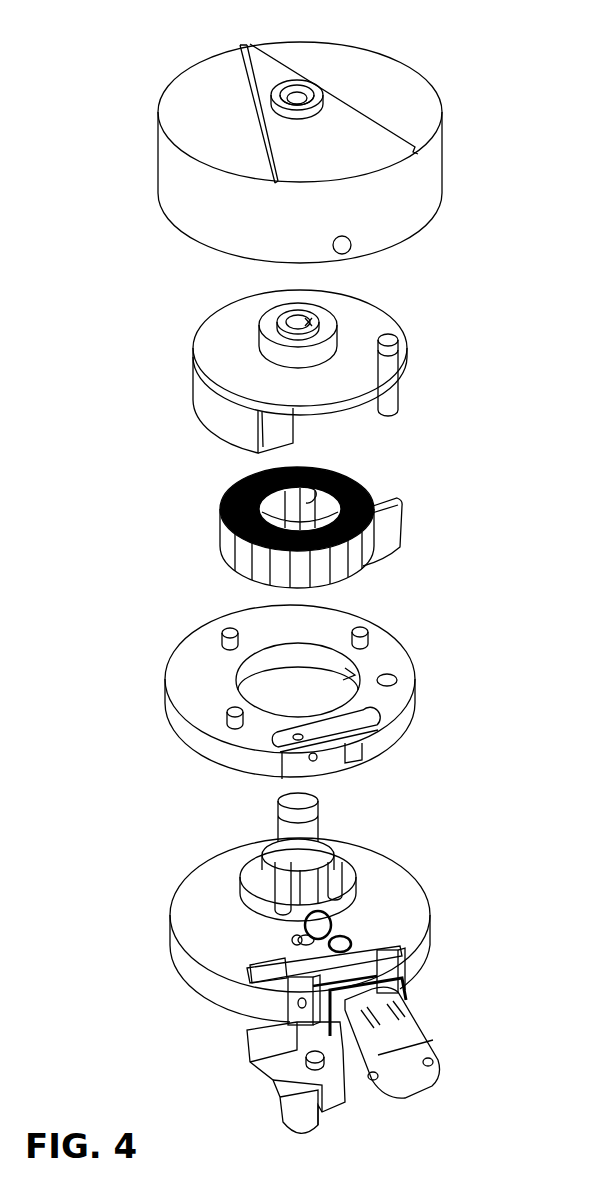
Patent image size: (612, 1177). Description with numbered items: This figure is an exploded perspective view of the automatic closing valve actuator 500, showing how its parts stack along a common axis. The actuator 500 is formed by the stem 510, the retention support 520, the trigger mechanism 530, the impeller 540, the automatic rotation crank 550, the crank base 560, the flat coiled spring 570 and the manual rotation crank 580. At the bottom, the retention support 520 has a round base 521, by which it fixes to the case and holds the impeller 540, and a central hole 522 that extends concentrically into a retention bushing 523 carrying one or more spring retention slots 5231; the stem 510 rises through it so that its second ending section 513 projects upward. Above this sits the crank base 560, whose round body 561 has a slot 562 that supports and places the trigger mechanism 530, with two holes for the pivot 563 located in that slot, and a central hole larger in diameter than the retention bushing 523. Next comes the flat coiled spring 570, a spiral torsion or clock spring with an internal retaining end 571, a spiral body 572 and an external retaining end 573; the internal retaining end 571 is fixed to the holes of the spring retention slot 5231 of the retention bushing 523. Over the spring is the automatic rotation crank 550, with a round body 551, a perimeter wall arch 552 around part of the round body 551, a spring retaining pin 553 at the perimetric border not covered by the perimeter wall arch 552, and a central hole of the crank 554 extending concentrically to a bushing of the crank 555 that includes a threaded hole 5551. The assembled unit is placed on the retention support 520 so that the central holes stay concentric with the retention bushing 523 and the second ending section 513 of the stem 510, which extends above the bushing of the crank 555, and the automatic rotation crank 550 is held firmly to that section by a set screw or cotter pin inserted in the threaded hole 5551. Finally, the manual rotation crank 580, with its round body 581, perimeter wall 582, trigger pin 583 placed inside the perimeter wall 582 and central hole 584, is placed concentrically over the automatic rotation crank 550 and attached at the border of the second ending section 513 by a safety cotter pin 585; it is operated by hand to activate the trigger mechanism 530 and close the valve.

The actuator 500 is at (470, 91).
The stem 510 is at (198, 813).
The second ending section of the stem 513 is at (290, 840).
The retention support 520 is at (303, 954).
The round base 521 is at (193, 923).
The central hole 522 is at (323, 850).
The retention bushing 523 is at (296, 885).
The spring retention slot 5231 is at (315, 885).
The trigger mechanism 530 is at (282, 950).
The impeller 540 is at (417, 1070).
The automatic rotation crank 550 is at (293, 355).
The round body 551 is at (237, 323).
The perimeter wall arch 552 is at (207, 392).
The spring retaining pin 553 is at (397, 398).
The central hole of the crank 554 is at (315, 322).
The bushing of the crank 555 is at (281, 355).
The threaded hole 5551 is at (288, 322).
The crank base 560 is at (306, 695).
The round body 561 is at (207, 675).
The slot 562 is at (333, 727).
The holes for the pivot 563 is at (313, 757).
The flat coiled spring 570 is at (313, 522).
The internal retaining end 571 is at (314, 506).
The spiral body 572 is at (253, 512).
The external retaining end 573 is at (405, 515).
The manual rotation crank 580 is at (295, 150).
The round body 581 is at (222, 108).
The perimeter wall 582 is at (417, 183).
The trigger pin 583 is at (350, 940).
The central hole 584 is at (293, 117).
The safety cotter pin 585 is at (318, 97).